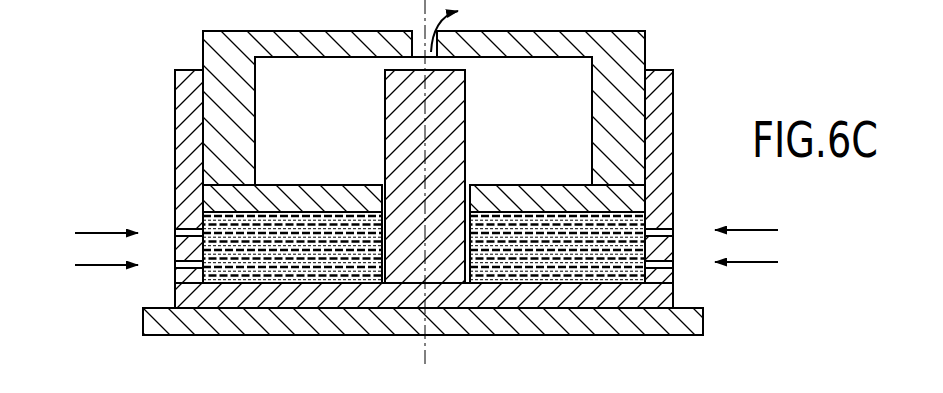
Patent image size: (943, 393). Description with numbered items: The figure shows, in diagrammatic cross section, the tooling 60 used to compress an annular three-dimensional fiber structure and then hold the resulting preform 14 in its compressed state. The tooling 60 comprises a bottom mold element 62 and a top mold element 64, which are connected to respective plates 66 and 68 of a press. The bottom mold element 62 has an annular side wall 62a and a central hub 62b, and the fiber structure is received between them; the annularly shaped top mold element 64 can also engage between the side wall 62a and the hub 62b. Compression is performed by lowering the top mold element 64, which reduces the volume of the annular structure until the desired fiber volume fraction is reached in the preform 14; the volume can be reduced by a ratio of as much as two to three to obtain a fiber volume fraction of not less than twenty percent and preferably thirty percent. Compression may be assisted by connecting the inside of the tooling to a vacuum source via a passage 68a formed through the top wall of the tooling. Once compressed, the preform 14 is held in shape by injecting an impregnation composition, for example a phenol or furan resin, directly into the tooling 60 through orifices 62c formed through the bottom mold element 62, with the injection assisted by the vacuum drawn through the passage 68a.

The tooling 60 is at (108, 146).
The plate of a press 68 is at (218, 130).
The passage 68a is at (418, 38).
The bottom mold element 62 is at (215, 300).
The annular side wall 62a is at (661, 112).
The central hub 62b is at (425, 130).
The orifices 62c is at (175, 233).
The top mold element 64 is at (286, 193).
The preform 14 is at (502, 212).
The plate of a press 66 is at (683, 321).